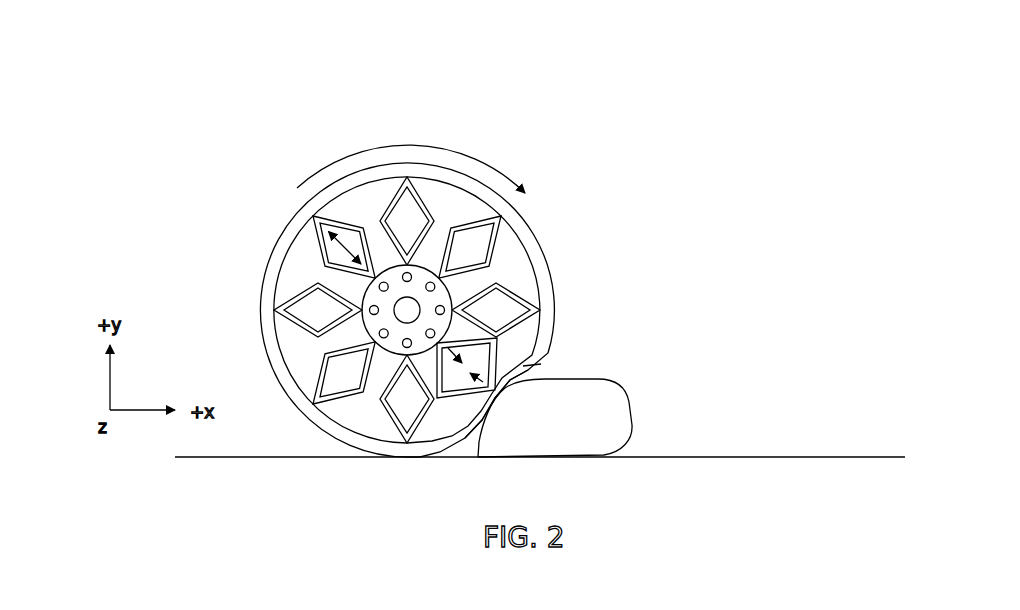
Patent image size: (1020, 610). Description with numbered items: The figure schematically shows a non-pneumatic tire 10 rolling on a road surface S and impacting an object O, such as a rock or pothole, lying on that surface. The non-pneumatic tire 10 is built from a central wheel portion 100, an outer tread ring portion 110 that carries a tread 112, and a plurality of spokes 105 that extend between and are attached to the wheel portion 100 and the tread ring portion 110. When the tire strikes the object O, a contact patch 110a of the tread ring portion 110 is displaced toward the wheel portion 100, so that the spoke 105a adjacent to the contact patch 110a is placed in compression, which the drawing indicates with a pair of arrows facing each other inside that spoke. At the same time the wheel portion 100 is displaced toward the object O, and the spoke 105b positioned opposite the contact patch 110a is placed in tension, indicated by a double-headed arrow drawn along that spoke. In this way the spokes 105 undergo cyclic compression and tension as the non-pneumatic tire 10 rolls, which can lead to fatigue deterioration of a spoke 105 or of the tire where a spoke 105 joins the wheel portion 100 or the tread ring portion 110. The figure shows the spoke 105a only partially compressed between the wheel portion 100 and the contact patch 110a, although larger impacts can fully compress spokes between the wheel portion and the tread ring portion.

The non-pneumatic tire 10 is at (566, 180).
The wheel portion 100 is at (370, 341).
The spokes 105 is at (497, 228).
The spoke adjacent to the contact patch 105a is at (463, 395).
The spoke oppositely positioned the contact patch 105b is at (322, 252).
The tread ring portion 110 is at (531, 236).
The contact patch 110a is at (525, 372).
The tread 112 is at (552, 275).
The object O is at (626, 399).
The road surface S is at (790, 456).